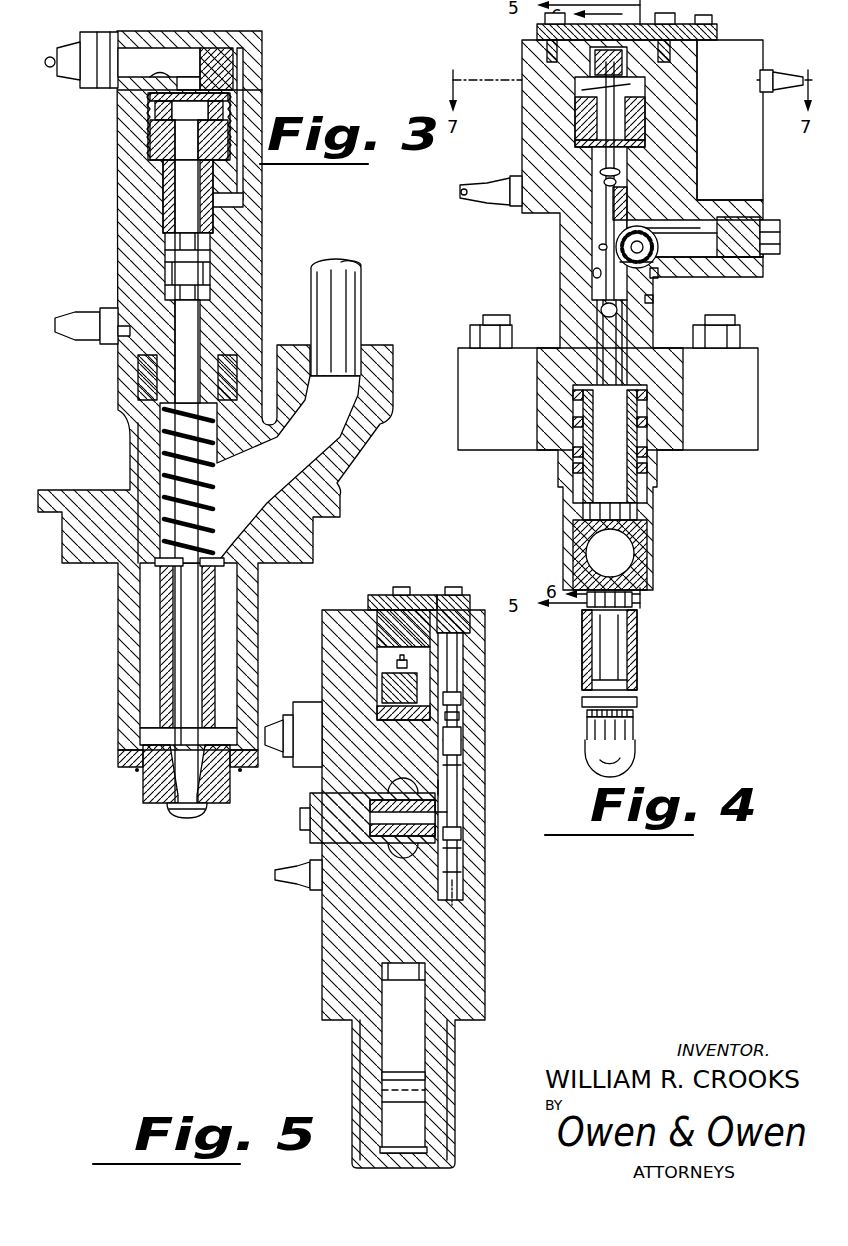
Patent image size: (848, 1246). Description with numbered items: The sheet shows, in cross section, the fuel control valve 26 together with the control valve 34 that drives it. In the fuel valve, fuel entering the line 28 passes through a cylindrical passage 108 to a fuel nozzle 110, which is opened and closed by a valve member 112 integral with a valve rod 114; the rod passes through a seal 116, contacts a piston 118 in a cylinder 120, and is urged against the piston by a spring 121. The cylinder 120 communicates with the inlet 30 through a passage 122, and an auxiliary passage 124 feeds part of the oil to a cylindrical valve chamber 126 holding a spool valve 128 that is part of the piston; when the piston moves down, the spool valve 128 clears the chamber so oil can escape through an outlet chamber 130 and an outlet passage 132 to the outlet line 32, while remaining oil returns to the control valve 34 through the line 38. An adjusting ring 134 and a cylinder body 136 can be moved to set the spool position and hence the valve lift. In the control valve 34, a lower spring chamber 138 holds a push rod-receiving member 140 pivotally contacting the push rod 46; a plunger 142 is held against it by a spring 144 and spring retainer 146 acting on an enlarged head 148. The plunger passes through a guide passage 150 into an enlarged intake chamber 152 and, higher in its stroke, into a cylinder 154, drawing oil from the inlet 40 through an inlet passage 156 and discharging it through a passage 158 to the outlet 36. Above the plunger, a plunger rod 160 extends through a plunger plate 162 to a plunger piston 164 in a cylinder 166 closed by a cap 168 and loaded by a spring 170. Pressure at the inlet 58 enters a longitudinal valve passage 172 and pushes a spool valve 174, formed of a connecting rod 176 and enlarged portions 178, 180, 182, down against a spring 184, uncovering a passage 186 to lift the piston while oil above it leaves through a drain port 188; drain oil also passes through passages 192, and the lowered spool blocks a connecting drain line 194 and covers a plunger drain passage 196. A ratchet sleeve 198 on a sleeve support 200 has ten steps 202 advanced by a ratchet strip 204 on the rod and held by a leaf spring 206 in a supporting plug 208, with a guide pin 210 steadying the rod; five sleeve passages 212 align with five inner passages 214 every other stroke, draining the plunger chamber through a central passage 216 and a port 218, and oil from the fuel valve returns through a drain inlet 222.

In FIG. 3, the fuel control valve 26 is at (354, 487).
In FIG. 3, the line 28 is at (362, 282).
In FIG. 3, the inlet 30 is at (93, 33).
In FIG. 3, the outlet line 32 is at (86, 312).
In FIG. 4, the control valve 34 is at (510, 168).
In FIG. 5, the control valve 34 is at (520, 893).
In FIG. 5, the outlet 36 is at (293, 760).
In FIG. 3, the line 38 is at (57, 67).
In FIG. 5, the inlet 40 is at (305, 885).
In FIG. 4, the push rod 46 is at (638, 675).
In FIG. 4, the inlet 58 is at (800, 70).
In FIG. 3, the cylindrical passage 108 is at (232, 600).
In FIG. 3, the fuel nozzle 110 is at (172, 790).
In FIG. 3, the valve member 112 is at (187, 815).
In FIG. 3, the valve rod 114 is at (175, 648).
In FIG. 3, the seal 116 is at (140, 372).
In FIG. 3, the piston 118 is at (150, 148).
In FIG. 3, the cylinder 120 is at (157, 124).
In FIG. 3, the spring 121 is at (175, 447).
In FIG. 3, the passage 122 is at (157, 50).
In FIG. 3, the auxiliary passage 124 is at (232, 122).
In FIG. 3, the cylindrical valve chamber 126 is at (168, 195).
In FIG. 3, the spool valve 128 is at (165, 222).
In FIG. 3, the outlet chamber 130 is at (165, 276).
In FIG. 3, the outlet passage 132 is at (125, 333).
In FIG. 3, the adjusting ring 134 is at (228, 112).
In FIG. 3, the cylinder body 136 is at (150, 136).
In FIG. 4, the lower spring chamber 138 is at (655, 487).
In FIG. 4, the push rod-receiving member 140 is at (575, 543).
In FIG. 4, the plunger 142 is at (650, 455).
In FIG. 4, the spring 144 is at (578, 480).
In FIG. 4, the spring retainer 146 is at (575, 468).
In FIG. 4, the enlarged head 148 is at (580, 512).
In FIG. 4, the guide passage 150 is at (600, 318).
In FIG. 4, the enlarged intake chamber 152 is at (640, 318).
In FIG. 4, the cylinder 154 is at (593, 275).
In FIG. 4, the inlet passage 156 is at (592, 305).
In FIG. 4, the passage 158 is at (615, 180).
In FIG. 4, the plunger rod 160 is at (600, 190).
In FIG. 4, the plunger plate 162 is at (578, 140).
In FIG. 4, the plunger piston 164 is at (578, 118).
In FIG. 4, the cylinder 166 is at (578, 88).
In FIG. 4, the cap 168 is at (560, 50).
In FIG. 5, the cap 168 is at (380, 595).
In FIG. 4, the spring 170 is at (578, 100).
In FIG. 5, the longitudinal valve passage 172 is at (463, 787).
In FIG. 5, the spool valve 174 is at (462, 680).
In FIG. 5, the connecting rod 176 is at (463, 660).
In FIG. 5, the upper enlarged portion 178 is at (462, 700).
In FIG. 5, the intermediate enlarged portion 180 is at (463, 751).
In FIG. 5, the lower enlarged portion 182 is at (463, 830).
In FIG. 5, the spring 184 is at (465, 872).
In FIG. 5, the passage 186 is at (459, 720).
In FIG. 4, the drain port 188 is at (575, 66).
In FIG. 4, the passages 192 is at (658, 530).
In FIG. 5, the connecting drain line 194 is at (461, 740).
In FIG. 5, the plunger drain passage 196 is at (462, 765).
In FIG. 4, the ratchet sleeve 198 is at (652, 302).
In FIG. 5, the ratchet sleeve 198 is at (458, 848).
In FIG. 4, the sleeve support 200 is at (655, 263).
In FIG. 5, the sleeve support 200 is at (345, 795).
In FIG. 4, the steps 202 is at (642, 222).
In FIG. 4, the ratchet strip 204 is at (650, 212).
In FIG. 4, the leaf spring 206 is at (725, 257).
In FIG. 4, the supporting plug 208 is at (755, 255).
In FIG. 4, the guide pin 210 is at (598, 247).
In FIG. 4, the sleeve passages 212 is at (657, 277).
In FIG. 4, the inner passages 214 is at (652, 243).
In FIG. 4, the central passage 216 is at (665, 249).
In FIG. 5, the central passage 216 is at (375, 815).
In FIG. 5, the port 218 is at (447, 818).
In FIG. 4, the drain inlet 222 is at (500, 193).